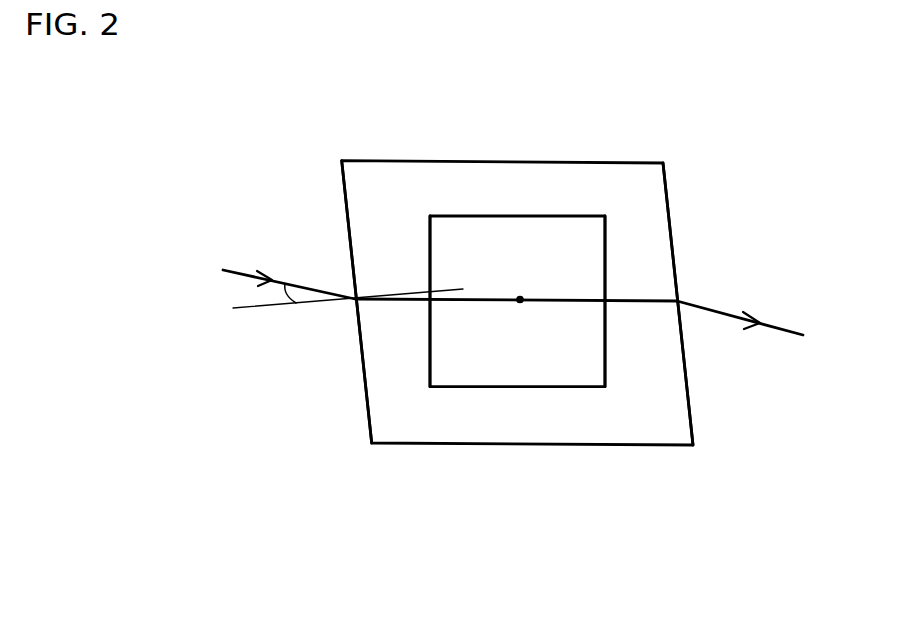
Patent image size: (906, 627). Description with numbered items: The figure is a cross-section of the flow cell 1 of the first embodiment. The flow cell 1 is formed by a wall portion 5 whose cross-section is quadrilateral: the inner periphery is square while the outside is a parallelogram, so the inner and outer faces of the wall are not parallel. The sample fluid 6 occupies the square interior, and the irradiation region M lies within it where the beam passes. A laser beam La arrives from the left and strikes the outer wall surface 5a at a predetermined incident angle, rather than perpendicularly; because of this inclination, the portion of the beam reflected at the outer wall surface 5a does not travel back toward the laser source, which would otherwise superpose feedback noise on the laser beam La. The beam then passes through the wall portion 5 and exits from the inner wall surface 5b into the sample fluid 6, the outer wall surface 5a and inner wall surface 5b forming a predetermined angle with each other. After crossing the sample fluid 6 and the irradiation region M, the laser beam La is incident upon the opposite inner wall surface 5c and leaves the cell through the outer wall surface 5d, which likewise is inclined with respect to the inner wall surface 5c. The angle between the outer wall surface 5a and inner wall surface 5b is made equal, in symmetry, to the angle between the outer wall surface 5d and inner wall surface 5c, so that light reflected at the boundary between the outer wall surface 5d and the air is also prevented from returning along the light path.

The flow cell 1 is at (517, 120).
The wall portion 5 is at (388, 180).
The outer wall surface 5a is at (355, 327).
The inner wall surface 5b is at (430, 343).
The inner wall surface 5c is at (605, 348).
The outer wall surface 5d is at (676, 270).
The sample fluid 6 is at (573, 240).
The laser beam La is at (236, 238).
The irradiation region M is at (520, 300).